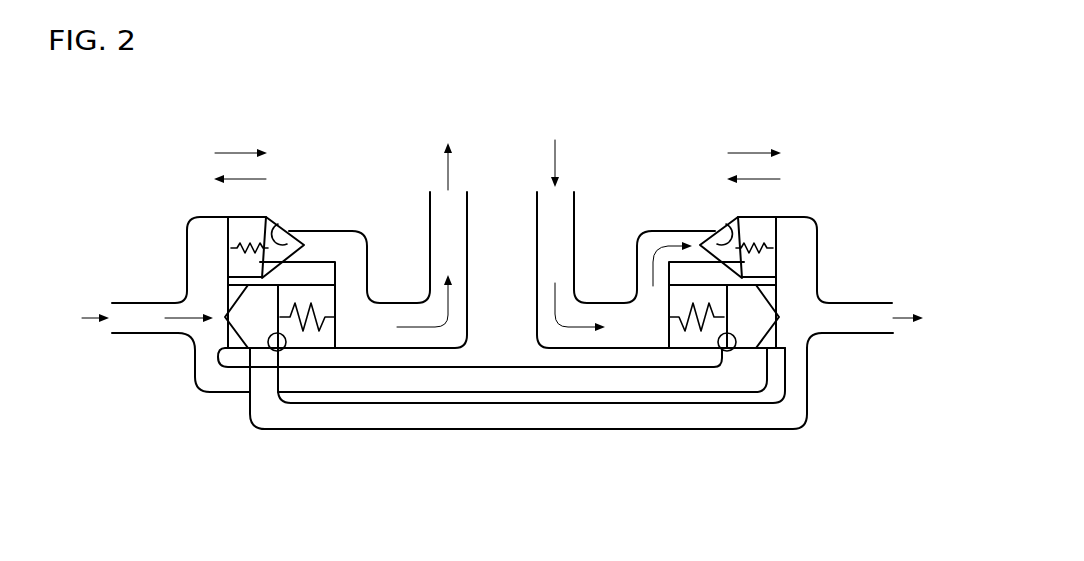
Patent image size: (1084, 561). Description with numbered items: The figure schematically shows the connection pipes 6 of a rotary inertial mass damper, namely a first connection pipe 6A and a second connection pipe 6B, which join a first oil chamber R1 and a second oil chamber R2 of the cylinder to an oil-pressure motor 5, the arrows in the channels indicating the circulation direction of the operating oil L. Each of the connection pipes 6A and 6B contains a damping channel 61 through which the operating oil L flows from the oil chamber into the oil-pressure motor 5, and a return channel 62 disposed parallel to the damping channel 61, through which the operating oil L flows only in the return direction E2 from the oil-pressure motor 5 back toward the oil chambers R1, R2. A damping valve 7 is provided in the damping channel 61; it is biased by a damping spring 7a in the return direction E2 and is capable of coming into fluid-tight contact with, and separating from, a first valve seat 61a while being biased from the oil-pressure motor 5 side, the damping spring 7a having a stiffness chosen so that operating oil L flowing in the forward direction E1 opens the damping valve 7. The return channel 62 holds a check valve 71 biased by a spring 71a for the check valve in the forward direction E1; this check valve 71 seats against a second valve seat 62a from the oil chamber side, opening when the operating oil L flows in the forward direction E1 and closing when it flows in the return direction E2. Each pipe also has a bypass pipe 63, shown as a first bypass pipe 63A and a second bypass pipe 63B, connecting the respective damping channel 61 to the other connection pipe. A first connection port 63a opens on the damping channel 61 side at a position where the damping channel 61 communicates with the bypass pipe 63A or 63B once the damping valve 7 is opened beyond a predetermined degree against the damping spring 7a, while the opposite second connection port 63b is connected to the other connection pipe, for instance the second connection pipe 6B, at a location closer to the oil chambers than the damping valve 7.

The oil-pressure motor 5 is at (505, 144).
The connection pipes 6 is at (492, 220).
The first connection pipe 6A is at (182, 219).
The second connection pipe 6B is at (823, 220).
The damping valve 7 is at (258, 333).
The damping spring 7a is at (337, 332).
The damping channel 61 is at (310, 332).
The first valve seat 61a is at (226, 296).
The return channel 62 is at (301, 262).
The second valve seat 62a is at (289, 236).
The bypass pipe 63 is at (502, 385).
The first bypass pipe 63A is at (493, 378).
The second bypass pipe 63B is at (565, 430).
The first connection port 63a is at (283, 352).
The second connection port 63b is at (200, 358).
The check valve 71 is at (270, 228).
The spring for the check valve 71a is at (226, 242).
The first oil chamber R1 is at (129, 333).
The second oil chamber R2 is at (929, 333).
The forward direction E1 is at (498, 142).
The return direction E2 is at (497, 191).
The operating oil L is at (180, 336).